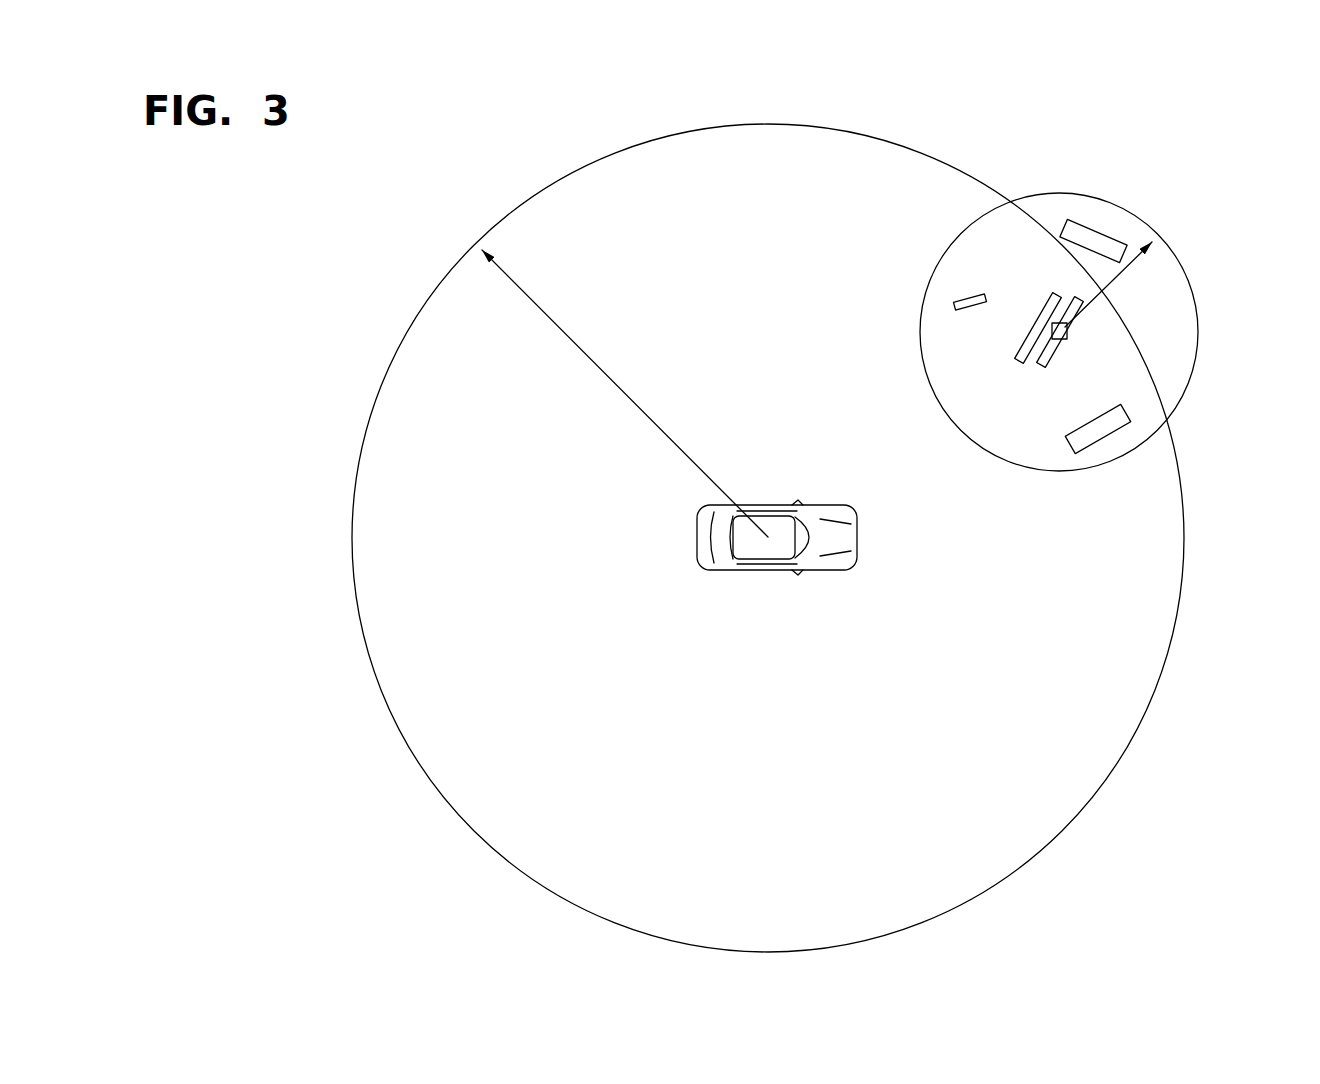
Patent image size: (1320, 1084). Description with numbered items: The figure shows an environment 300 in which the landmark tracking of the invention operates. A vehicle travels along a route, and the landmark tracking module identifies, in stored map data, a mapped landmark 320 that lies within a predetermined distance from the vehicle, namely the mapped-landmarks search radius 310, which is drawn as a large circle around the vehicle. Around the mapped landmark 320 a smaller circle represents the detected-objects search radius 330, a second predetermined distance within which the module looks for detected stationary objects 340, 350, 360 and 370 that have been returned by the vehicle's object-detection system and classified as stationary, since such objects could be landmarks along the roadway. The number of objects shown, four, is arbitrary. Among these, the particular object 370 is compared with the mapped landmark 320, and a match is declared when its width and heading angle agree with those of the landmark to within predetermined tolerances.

The environment 300 is at (1010, 118).
The mapped-landmarks search radius 310 is at (624, 390).
The mapped landmark 320 is at (1068, 332).
The detected-objects search radius 330 is at (1133, 268).
The detected stationary object 340 is at (1097, 232).
The detected stationary object 350 is at (1106, 437).
The detected stationary object 360 is at (967, 297).
The particular object 370 is at (1032, 338).